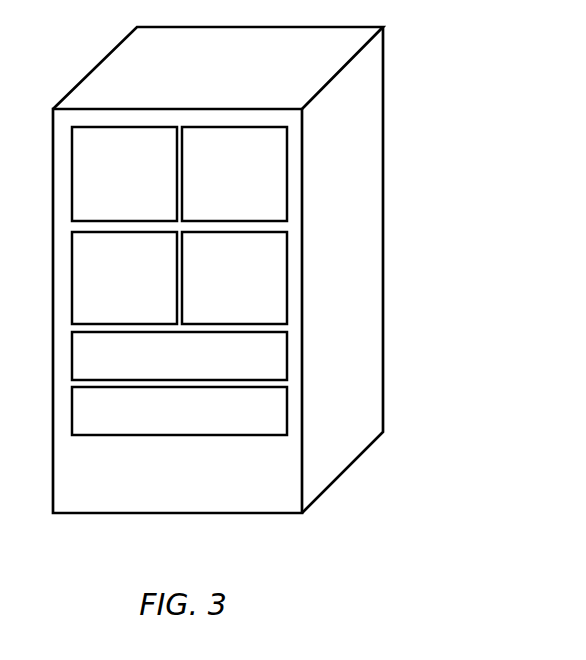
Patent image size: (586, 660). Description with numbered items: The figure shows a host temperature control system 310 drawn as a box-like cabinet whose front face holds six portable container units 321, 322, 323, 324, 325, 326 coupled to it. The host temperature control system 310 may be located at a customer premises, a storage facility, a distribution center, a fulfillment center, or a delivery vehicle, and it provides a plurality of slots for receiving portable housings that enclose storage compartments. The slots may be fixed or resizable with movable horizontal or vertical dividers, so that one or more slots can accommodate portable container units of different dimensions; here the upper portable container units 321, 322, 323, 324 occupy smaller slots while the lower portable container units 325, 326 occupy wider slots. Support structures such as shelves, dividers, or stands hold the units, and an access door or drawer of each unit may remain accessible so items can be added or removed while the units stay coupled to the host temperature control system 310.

The host temperature control system 310 is at (367, 168).
The portable container unit 321 is at (124, 174).
The portable container unit 322 is at (234, 174).
The portable container unit 323 is at (124, 278).
The portable container unit 324 is at (234, 278).
The portable container unit 325 is at (179, 356).
The portable container unit 326 is at (179, 411).